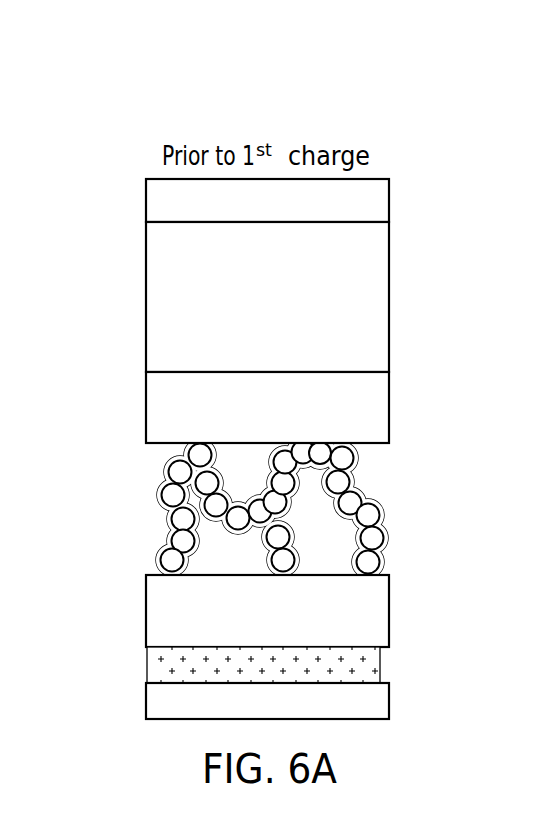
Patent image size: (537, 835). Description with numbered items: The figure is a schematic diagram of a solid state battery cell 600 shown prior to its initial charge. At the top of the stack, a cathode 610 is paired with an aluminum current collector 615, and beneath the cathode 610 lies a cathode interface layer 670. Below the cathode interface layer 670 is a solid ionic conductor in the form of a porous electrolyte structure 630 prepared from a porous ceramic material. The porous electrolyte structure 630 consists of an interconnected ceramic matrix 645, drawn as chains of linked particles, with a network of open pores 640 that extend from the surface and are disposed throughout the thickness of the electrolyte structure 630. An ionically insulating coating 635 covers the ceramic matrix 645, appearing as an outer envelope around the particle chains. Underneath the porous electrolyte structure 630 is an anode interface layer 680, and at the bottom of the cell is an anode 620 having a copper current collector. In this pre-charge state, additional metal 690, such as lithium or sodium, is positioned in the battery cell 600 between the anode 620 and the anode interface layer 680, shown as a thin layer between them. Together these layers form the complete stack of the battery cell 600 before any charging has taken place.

The battery cell 600 is at (182, 116).
The aluminum current collector 615 is at (389, 196).
The cathode 610 is at (389, 285).
The cathode interface layer 670 is at (389, 410).
The porous electrolyte structure 630 is at (140, 530).
The ceramic matrix 645 is at (170, 467).
The ionically insulating coating 635 is at (355, 456).
The open pores 640 is at (333, 541).
The anode interface layer 680 is at (389, 611).
The additional metal 690 is at (380, 663).
The anode 620 is at (389, 697).